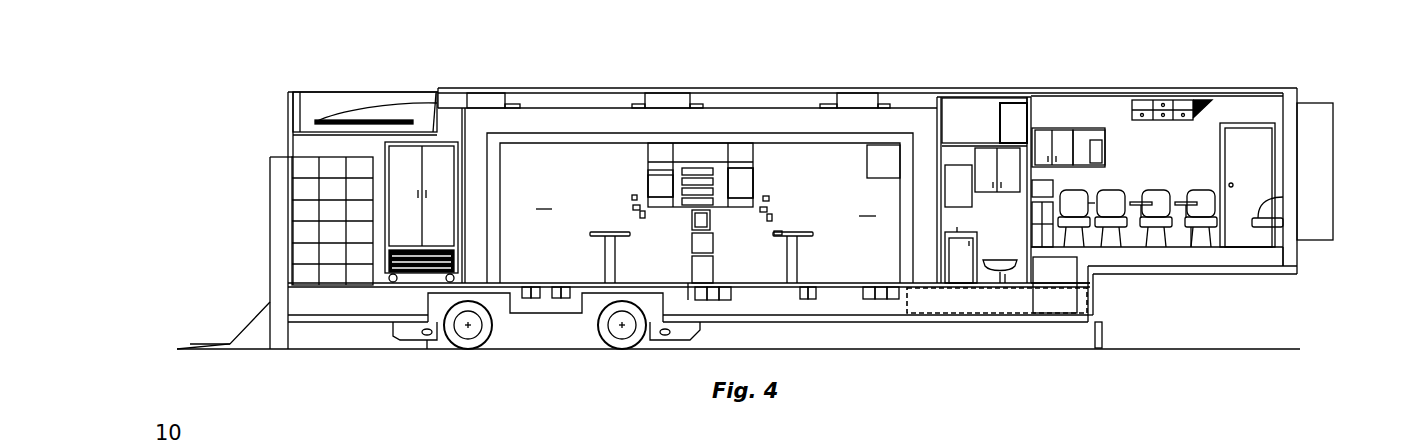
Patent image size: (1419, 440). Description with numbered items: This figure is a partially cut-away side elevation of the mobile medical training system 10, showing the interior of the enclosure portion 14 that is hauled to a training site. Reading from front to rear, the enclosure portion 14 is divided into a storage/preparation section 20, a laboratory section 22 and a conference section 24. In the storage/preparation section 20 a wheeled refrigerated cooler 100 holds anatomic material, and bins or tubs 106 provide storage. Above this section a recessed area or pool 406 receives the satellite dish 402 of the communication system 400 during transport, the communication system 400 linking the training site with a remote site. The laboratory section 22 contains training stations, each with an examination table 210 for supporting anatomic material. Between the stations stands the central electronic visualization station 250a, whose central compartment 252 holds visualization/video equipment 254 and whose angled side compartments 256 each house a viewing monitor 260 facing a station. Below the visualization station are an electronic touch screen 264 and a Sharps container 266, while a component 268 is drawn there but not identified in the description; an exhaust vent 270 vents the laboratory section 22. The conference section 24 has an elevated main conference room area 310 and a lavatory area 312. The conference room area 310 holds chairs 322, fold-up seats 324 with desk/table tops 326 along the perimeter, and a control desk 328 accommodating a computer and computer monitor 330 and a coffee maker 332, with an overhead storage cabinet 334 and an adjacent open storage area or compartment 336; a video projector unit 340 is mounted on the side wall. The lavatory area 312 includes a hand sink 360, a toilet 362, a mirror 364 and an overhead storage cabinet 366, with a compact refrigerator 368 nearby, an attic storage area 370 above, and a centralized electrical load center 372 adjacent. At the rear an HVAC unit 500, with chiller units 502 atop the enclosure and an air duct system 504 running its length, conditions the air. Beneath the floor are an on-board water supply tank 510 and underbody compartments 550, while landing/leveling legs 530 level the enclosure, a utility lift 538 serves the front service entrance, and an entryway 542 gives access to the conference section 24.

The mobile medical training system 10 is at (170, 67).
The enclosure portion 14 is at (178, 135).
The storage/preparation section 20 is at (380, 86).
The laboratory section 22 is at (710, 86).
The conference section 24 is at (1140, 84).
The refrigerated cooler 100 is at (432, 142).
The bins or tubs 106 is at (330, 166).
The examination table 210 is at (590, 240).
The central electronic visualization station 250a is at (762, 148).
The central compartment 252 is at (698, 148).
The visualization/video equipment 254 is at (652, 148).
The side compartment 256 is at (737, 146).
The viewing monitor 260 is at (660, 188).
The electronic touch screen 264 is at (692, 215).
The Sharps container 266 is at (692, 245).
The floor outlet 268 is at (690, 288).
The exhaust vent 270 is at (885, 152).
The main conference room area 310 is at (1199, 160).
The lavatory area 312 is at (1013, 227).
The chairs 322 is at (1095, 322).
The fold-up seats 324 is at (1268, 195).
The desk/table tops 326 is at (1185, 245).
The control desk 328 is at (1098, 190).
The computer and computer monitor 330 is at (1045, 178).
The coffee maker 332 is at (1096, 145).
The overhead storage cabinet 334 is at (1060, 136).
The open storage area or compartment 336 is at (1085, 135).
The video projector unit 340 is at (1212, 94).
The hand sink 360 is at (955, 264).
The toilet 362 is at (998, 274).
The mirror 364 is at (950, 207).
The overhead storage cabinet 366 is at (1025, 106).
The compact refrigerator 368 is at (1003, 127).
The attic storage area 370 is at (953, 106).
The centralized electrical load center 372 is at (1023, 287).
The communication system 400 is at (309, 95).
The satellite dish 402 is at (347, 112).
The recessed area or pool 406 is at (302, 104).
The HVAC unit 500 is at (1318, 100).
The chiller units 502 is at (487, 100).
The air duct system 504 is at (1291, 232).
The on-board water supply tank 510 is at (905, 306).
The landing/leveling legs 530 is at (430, 345).
The utility lift 538 is at (205, 340).
The entryway 542 is at (1249, 118).
The underbody compartments 550 is at (1045, 306).